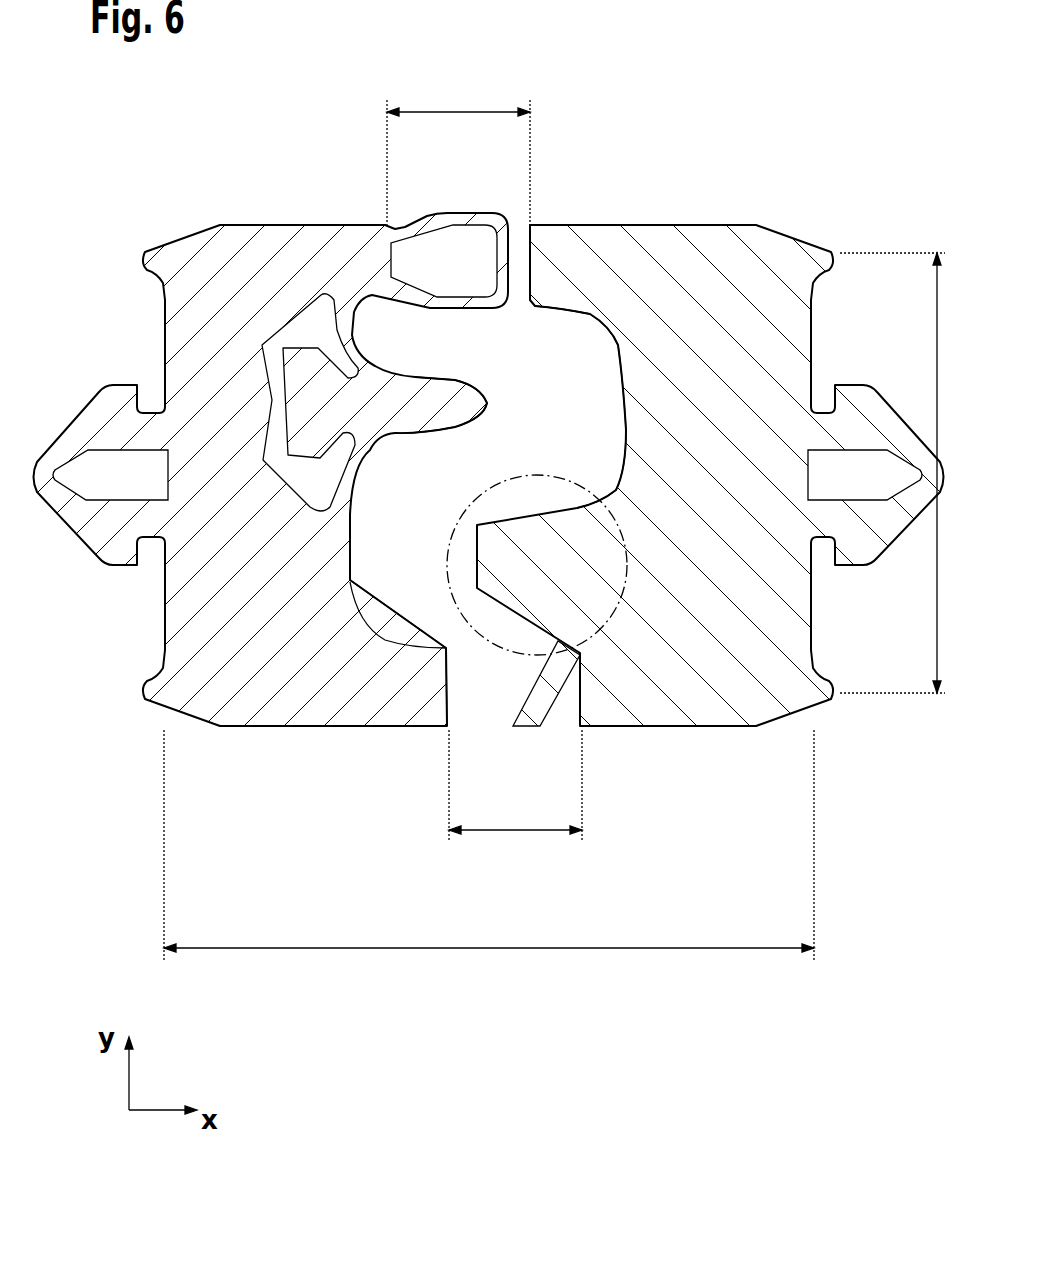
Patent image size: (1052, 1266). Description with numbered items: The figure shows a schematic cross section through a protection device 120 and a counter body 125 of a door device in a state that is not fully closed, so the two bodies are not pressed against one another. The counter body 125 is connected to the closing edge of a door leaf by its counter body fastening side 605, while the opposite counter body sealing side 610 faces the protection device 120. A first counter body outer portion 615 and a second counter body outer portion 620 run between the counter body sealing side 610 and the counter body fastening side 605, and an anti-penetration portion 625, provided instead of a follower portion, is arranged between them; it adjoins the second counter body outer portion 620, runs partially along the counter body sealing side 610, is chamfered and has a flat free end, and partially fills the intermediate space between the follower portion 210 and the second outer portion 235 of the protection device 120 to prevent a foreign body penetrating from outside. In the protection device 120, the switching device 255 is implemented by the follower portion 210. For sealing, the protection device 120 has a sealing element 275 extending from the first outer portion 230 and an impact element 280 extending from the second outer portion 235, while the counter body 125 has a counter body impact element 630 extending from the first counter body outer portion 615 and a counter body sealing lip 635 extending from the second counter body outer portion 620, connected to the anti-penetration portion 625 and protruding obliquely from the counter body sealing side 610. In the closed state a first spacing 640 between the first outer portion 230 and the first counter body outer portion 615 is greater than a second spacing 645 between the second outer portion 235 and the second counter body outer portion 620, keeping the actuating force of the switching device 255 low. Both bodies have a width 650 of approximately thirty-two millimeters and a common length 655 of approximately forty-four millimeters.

The protection device 120 is at (271, 456).
The counter body 125 is at (710, 456).
The follower portion 210 is at (407, 392).
The first outer portion 230 is at (285, 214).
The second outer portion 235 is at (309, 738).
The switching device 255 is at (245, 378).
The sealing element 275 is at (456, 214).
The impact element 280 is at (428, 688).
The counter body fastening side 605 is at (821, 315).
The counter body sealing side 610 is at (616, 398).
The first counter body outer portion 615 is at (711, 214).
The second counter body outer portion 620 is at (738, 738).
The anti-penetration portion 625 is at (615, 610).
The counter body impact element 630 is at (549, 245).
The counter body sealing lip 635 is at (522, 730).
The first spacing 640 is at (462, 112).
The second spacing 645 is at (513, 832).
The width 650 is at (937, 626).
The common length 655 is at (442, 950).